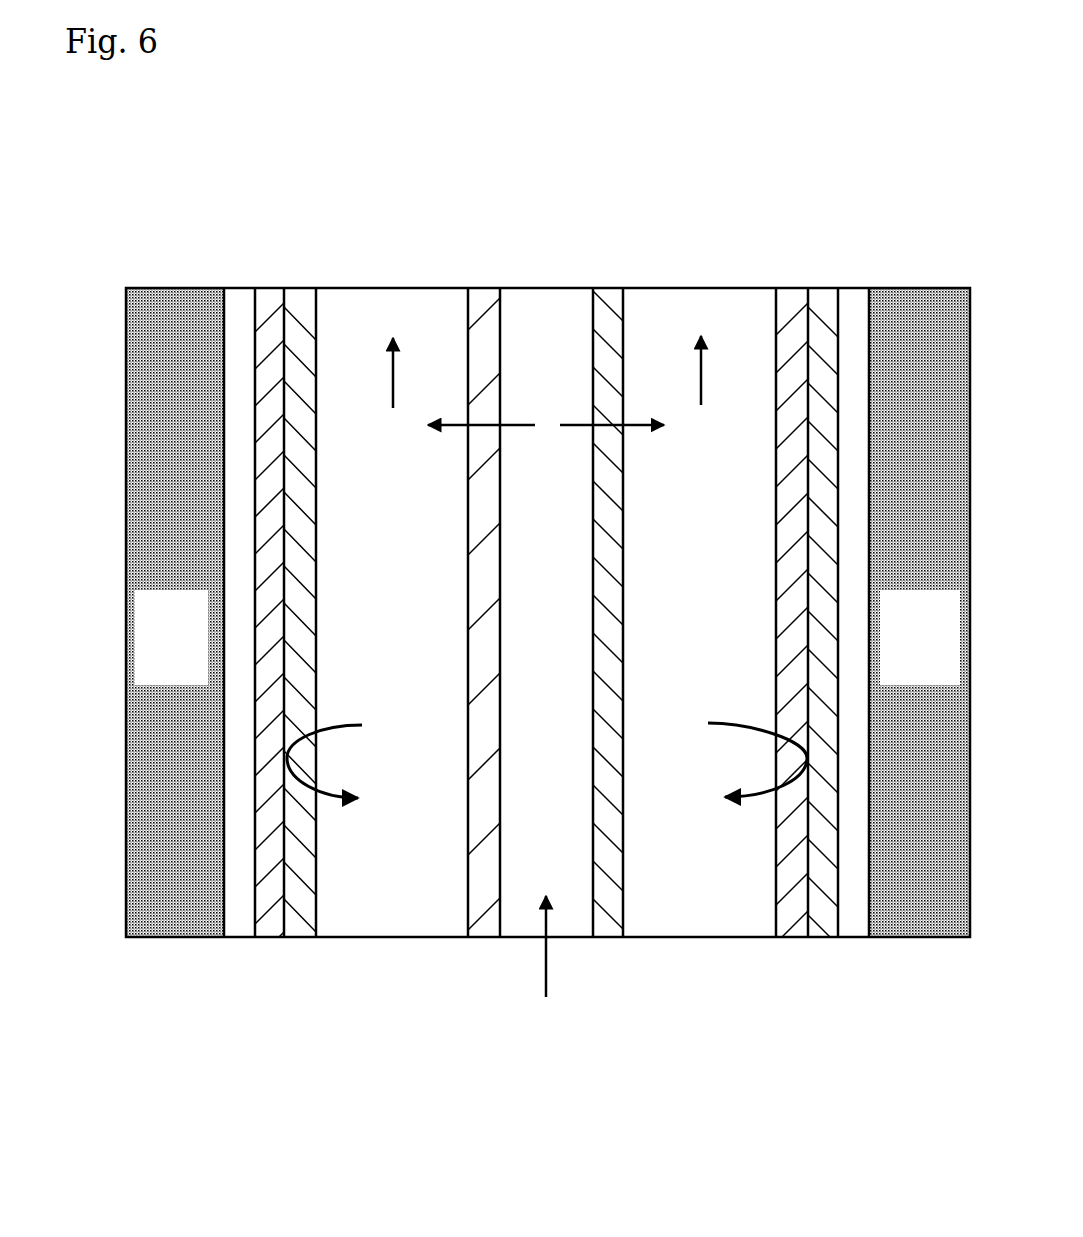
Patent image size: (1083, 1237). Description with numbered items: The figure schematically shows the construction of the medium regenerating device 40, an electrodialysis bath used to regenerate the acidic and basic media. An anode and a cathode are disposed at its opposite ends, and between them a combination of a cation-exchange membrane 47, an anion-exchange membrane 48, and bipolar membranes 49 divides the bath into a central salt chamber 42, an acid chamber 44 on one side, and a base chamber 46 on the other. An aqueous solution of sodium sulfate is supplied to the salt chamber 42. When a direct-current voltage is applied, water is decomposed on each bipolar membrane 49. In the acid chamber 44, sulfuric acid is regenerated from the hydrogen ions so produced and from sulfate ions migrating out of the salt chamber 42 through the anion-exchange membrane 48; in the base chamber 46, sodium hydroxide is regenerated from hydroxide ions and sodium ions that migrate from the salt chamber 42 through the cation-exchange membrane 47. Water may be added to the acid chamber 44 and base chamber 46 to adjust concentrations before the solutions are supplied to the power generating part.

The medium regenerating device 40 is at (275, 258).
The salt chamber 42 is at (540, 305).
The acid chamber 44 is at (450, 300).
The base chamber 46 is at (760, 303).
The cation-exchange membrane 47 is at (605, 927).
The anion-exchange membrane 48 is at (490, 927).
The bipolar membrane 49 is at (273, 937).